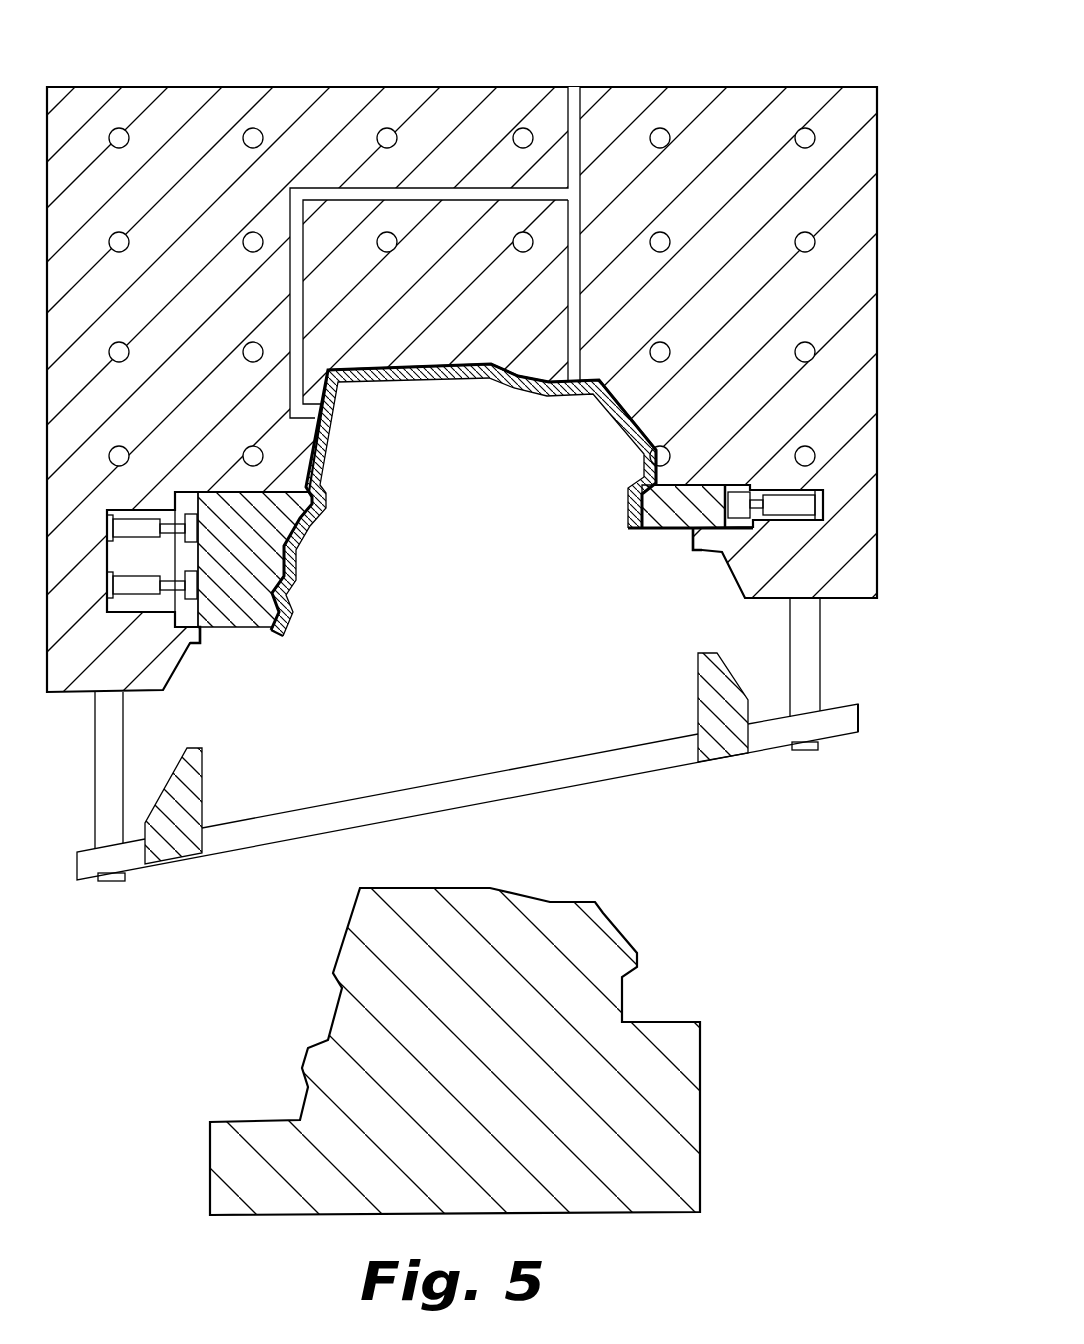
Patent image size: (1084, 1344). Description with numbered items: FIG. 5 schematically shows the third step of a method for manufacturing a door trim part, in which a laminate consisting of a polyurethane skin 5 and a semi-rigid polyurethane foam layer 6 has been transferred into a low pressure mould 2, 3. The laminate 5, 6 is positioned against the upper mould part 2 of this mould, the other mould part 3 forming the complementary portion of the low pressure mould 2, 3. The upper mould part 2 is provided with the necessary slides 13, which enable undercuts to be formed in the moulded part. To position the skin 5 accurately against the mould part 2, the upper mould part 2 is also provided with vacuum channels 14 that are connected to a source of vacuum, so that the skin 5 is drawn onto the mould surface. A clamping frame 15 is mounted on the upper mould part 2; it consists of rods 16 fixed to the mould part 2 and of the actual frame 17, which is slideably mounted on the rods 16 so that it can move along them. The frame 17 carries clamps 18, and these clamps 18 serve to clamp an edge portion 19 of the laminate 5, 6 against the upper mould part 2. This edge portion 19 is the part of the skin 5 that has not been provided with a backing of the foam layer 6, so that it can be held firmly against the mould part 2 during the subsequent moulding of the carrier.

The upper mould part 2 is at (815, 333).
The low pressure mould part 3 is at (645, 1077).
The polyurethane skin 5 is at (515, 388).
The semi-rigid polyurethane foam layer 6 is at (575, 388).
The slides 13 is at (242, 603).
The vacuum channels 14 is at (410, 195).
The clamping frame 15 is at (834, 761).
The rods 16 is at (808, 650).
The frame 17 is at (274, 830).
The clamps 18 is at (200, 778).
The edge portion 19 is at (198, 645).